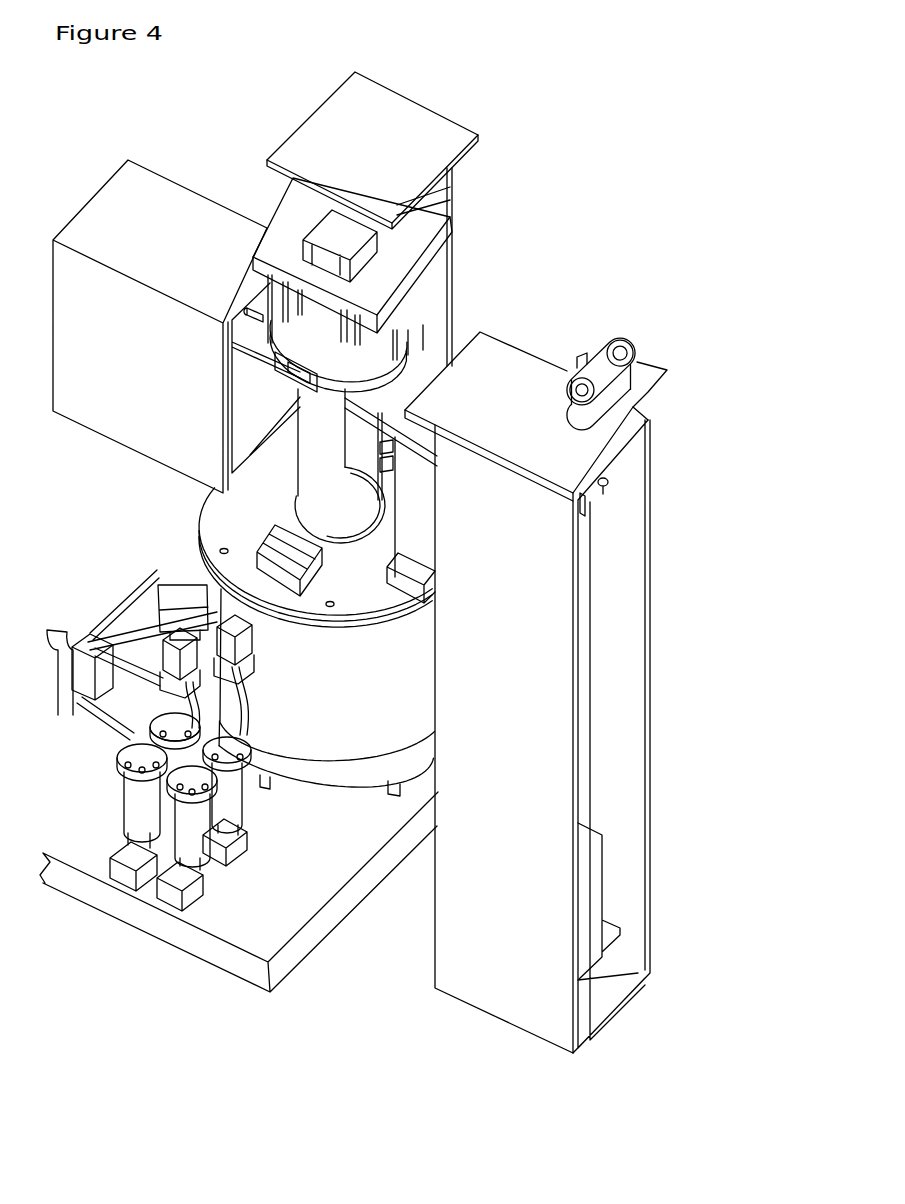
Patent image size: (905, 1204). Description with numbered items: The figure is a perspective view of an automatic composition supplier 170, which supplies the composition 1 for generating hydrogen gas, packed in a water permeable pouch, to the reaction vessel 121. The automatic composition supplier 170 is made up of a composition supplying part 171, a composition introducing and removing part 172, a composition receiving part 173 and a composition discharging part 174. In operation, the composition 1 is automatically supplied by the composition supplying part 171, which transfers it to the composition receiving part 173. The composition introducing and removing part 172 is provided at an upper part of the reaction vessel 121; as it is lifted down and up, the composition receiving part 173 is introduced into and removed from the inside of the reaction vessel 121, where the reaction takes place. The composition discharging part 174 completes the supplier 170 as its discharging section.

The composition for generating hydrogen gas 1 is at (418, 474).
The reaction vessel 121 is at (403, 648).
The automatic composition supplier 170 is at (553, 176).
The composition supplying part 171 is at (652, 358).
The composition introducing and removing part 172 is at (450, 243).
The composition receiving part 173 is at (318, 509).
The composition discharging part 174 is at (168, 195).